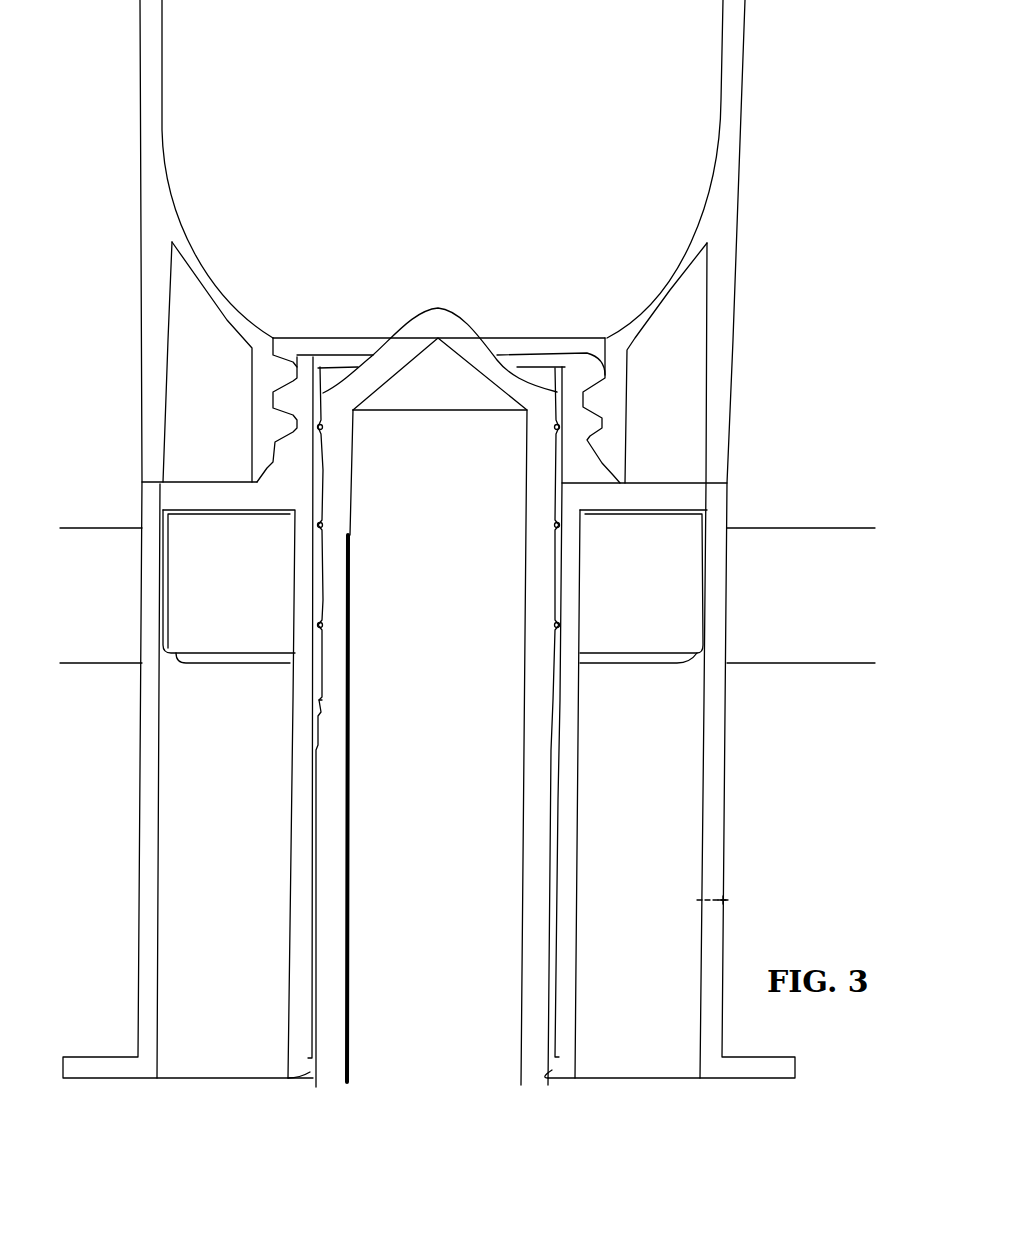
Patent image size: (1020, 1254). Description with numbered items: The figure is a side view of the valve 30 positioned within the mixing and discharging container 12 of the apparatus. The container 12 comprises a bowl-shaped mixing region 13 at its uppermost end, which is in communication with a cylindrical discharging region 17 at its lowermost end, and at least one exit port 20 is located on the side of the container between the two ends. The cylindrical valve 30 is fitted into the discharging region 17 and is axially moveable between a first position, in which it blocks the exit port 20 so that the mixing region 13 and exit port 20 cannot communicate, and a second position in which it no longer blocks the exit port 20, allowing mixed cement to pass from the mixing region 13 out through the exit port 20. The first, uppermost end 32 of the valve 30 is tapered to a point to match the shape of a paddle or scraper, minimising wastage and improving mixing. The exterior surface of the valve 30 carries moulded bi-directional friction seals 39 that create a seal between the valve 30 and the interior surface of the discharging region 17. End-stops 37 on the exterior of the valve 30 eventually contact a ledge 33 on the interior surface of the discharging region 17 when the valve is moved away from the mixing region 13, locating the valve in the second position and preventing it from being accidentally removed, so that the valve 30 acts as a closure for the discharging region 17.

The mixing and discharging container 12 is at (163, 70).
The mixing region 13 is at (682, 88).
The discharging region 17 is at (565, 483).
The exit port 20 is at (730, 565).
The valve 30 is at (505, 745).
The first end of the valve 32 is at (505, 371).
The ledge 33 is at (320, 720).
The end-stops 37 is at (322, 698).
The bi-directional friction seals 39 is at (315, 627).